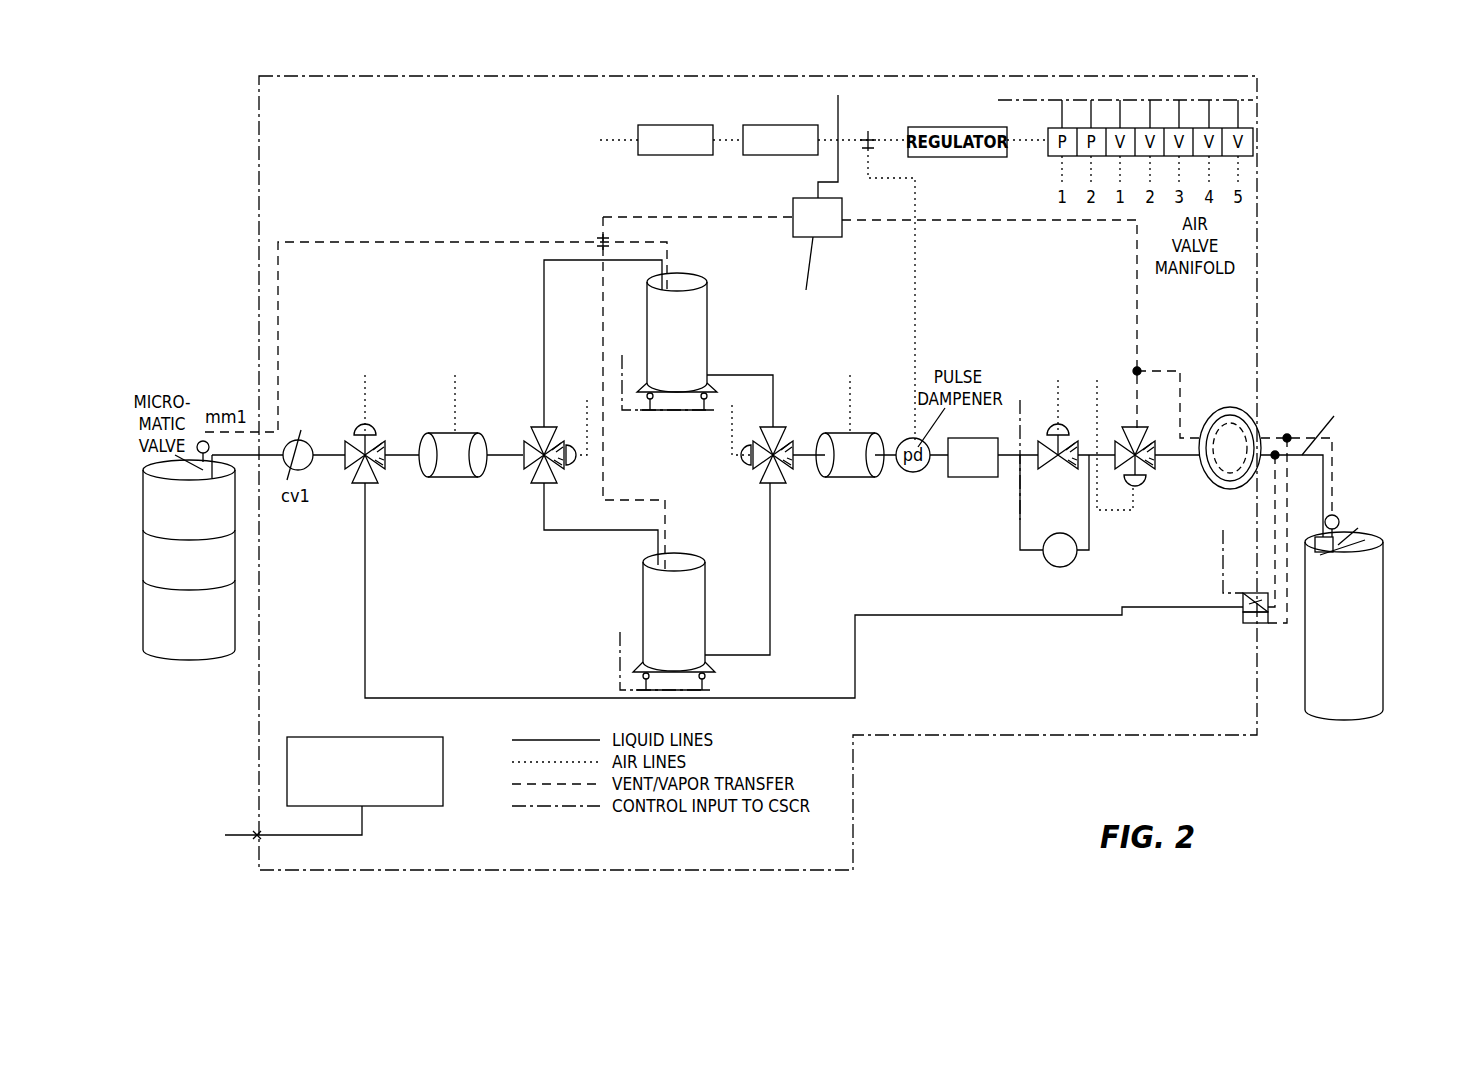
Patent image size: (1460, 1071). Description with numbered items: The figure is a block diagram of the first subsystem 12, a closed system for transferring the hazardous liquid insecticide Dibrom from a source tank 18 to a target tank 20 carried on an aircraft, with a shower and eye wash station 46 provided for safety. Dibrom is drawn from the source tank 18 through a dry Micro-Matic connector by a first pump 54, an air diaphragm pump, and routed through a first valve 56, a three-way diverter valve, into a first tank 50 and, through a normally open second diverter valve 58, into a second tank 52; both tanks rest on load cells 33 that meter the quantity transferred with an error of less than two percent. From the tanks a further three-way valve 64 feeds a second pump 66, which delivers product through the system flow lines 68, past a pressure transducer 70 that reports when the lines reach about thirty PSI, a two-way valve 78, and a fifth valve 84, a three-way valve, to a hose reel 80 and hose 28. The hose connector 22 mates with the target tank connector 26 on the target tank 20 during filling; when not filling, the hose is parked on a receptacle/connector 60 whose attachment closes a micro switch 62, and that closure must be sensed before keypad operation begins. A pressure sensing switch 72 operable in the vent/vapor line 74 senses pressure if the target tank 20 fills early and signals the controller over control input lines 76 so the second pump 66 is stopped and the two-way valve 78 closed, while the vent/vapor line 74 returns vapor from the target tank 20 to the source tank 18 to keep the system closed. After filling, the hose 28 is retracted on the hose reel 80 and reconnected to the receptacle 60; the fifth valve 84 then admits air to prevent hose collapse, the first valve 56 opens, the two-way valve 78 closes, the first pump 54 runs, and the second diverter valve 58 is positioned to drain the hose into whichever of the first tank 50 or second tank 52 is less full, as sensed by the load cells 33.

The first subsystem 12 is at (890, 742).
The source tank 18 is at (160, 660).
The target tank 20 is at (1331, 682).
The hose connector 22 is at (1340, 518).
The target tank connector 26 is at (1388, 546).
The hose 28 is at (1268, 455).
The load cells 33 is at (688, 412).
The shower and eye wash station 46 is at (425, 752).
The first tank 50 is at (684, 312).
The second tank 52 is at (685, 590).
The first pump 54 is at (450, 440).
The first valve 56 is at (346, 514).
The second diverter valve 58 is at (550, 424).
The receptacle/connector 60 is at (1254, 625).
The micro switch 62 is at (1243, 612).
The valve 64 is at (803, 412).
The second pump 66 is at (858, 462).
The system flow lines 68 is at (1008, 450).
The pressure transducer 70 is at (1078, 556).
The pressure sensing switch 72 is at (834, 238).
The vent/vapor line 74 is at (975, 220).
The control input lines 76 is at (816, 174).
The two-way valve 78 is at (1056, 432).
The hose reel 80 is at (1252, 404).
The fifth valve 84 is at (1145, 414).